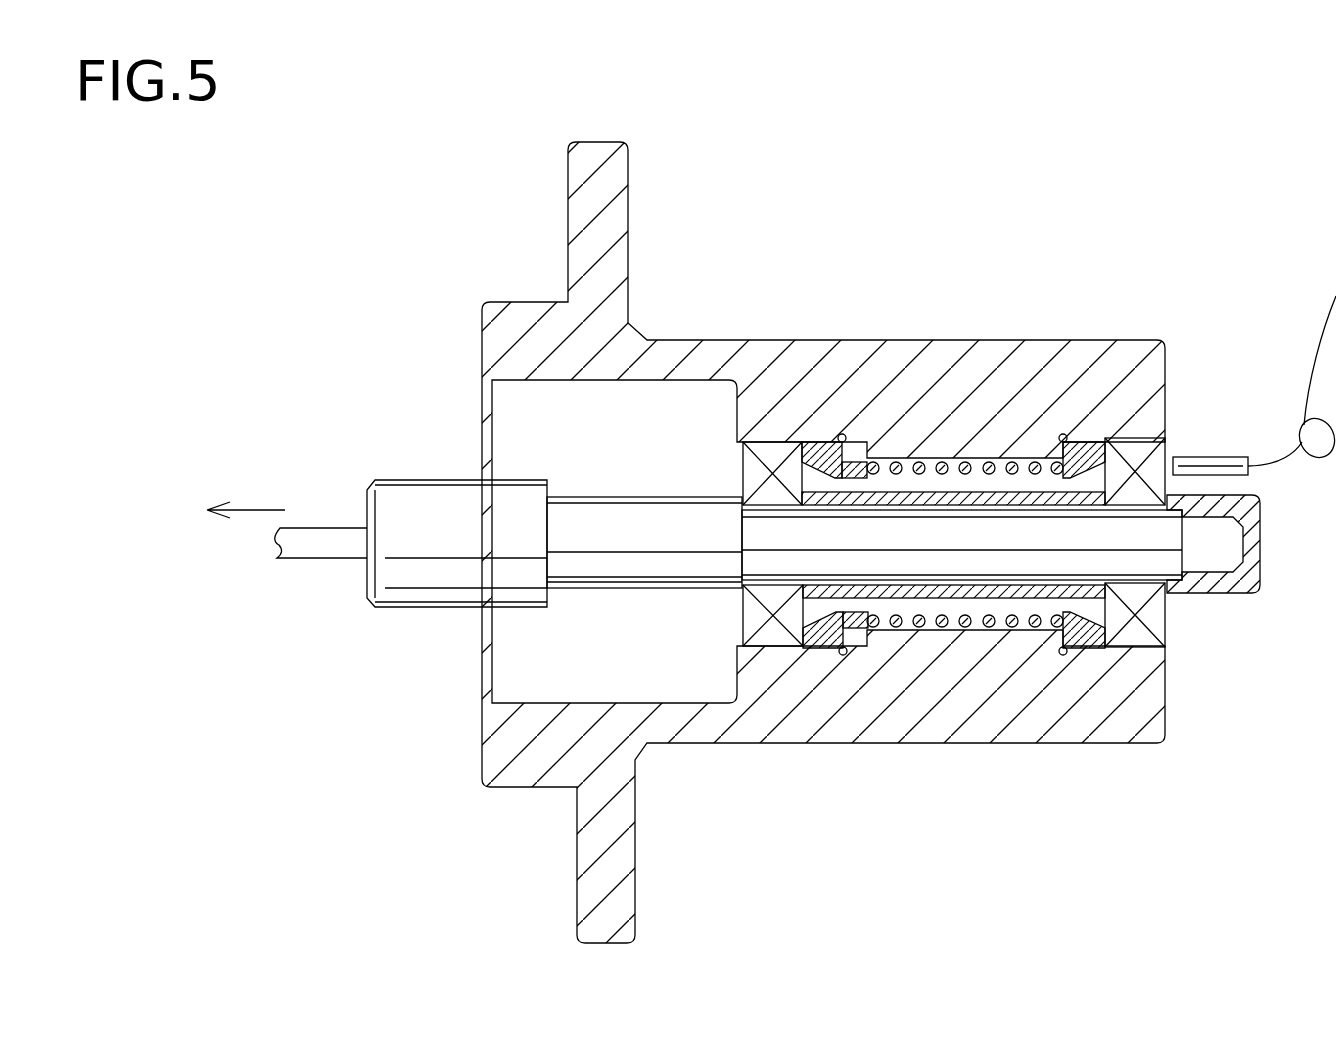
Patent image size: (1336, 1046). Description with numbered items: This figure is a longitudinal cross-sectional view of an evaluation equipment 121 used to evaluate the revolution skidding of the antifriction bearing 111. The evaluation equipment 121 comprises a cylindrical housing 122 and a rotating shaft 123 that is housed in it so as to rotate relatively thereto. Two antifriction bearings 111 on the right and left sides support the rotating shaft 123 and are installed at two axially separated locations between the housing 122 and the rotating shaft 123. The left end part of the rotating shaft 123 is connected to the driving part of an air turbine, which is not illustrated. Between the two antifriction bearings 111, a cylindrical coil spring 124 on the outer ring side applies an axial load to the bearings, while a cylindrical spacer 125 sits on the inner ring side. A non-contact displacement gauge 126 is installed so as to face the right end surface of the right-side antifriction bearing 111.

The antifriction bearing 111 is at (763, 453).
The evaluation equipment 121 is at (1141, 290).
The cylindrical housing 122 is at (1107, 728).
The rotating shaft 123 is at (777, 560).
The cylindrical coil spring 124 is at (912, 463).
The cylindrical spacer 125 is at (913, 600).
The non-contact displacement gauge 126 is at (1212, 455).